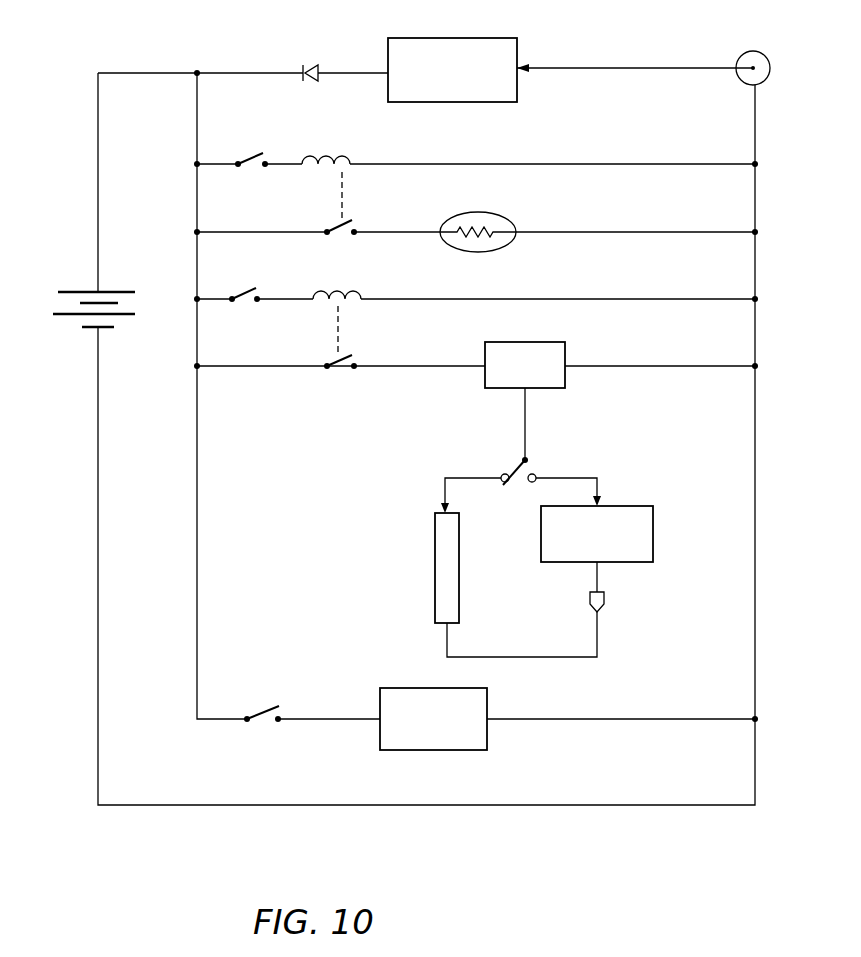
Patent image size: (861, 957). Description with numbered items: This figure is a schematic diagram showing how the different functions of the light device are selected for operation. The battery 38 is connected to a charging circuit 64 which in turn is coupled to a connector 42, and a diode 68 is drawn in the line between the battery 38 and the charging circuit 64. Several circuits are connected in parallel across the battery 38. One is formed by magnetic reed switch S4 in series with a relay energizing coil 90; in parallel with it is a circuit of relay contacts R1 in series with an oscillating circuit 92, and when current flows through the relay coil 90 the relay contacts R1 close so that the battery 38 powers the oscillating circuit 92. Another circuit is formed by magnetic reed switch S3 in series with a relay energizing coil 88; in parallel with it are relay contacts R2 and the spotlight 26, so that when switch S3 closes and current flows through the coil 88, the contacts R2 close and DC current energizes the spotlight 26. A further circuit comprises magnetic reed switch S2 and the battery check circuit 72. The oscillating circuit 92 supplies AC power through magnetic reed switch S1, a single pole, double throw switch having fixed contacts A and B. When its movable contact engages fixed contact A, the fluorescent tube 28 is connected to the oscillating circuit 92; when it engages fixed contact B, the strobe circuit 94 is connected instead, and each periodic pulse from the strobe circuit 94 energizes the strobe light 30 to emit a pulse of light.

The spotlight 26 is at (452, 250).
The fluorescent tube 28 is at (435, 580).
The strobe light 30 is at (604, 602).
The battery 38 is at (62, 299).
The connector 42 is at (764, 82).
The charging circuit 64 is at (388, 38).
The diode 68 is at (311, 81).
The battery check circuit 72 is at (410, 692).
The relay energizing coil 88 is at (348, 155).
The relay energizing coil 90 is at (339, 291).
The oscillating circuit 92 is at (565, 348).
The strobe circuit 94 is at (653, 549).
The magnetic reed switch S1 is at (510, 470).
The magnetic reed switch S2 is at (263, 712).
The magnetic reed switch S3 is at (247, 162).
The magnetic reed switch S4 is at (240, 288).
The relay contacts R1 is at (326, 360).
The relay contacts R2 is at (327, 229).
The fixed contact A is at (502, 473).
The fixed contact B is at (536, 473).